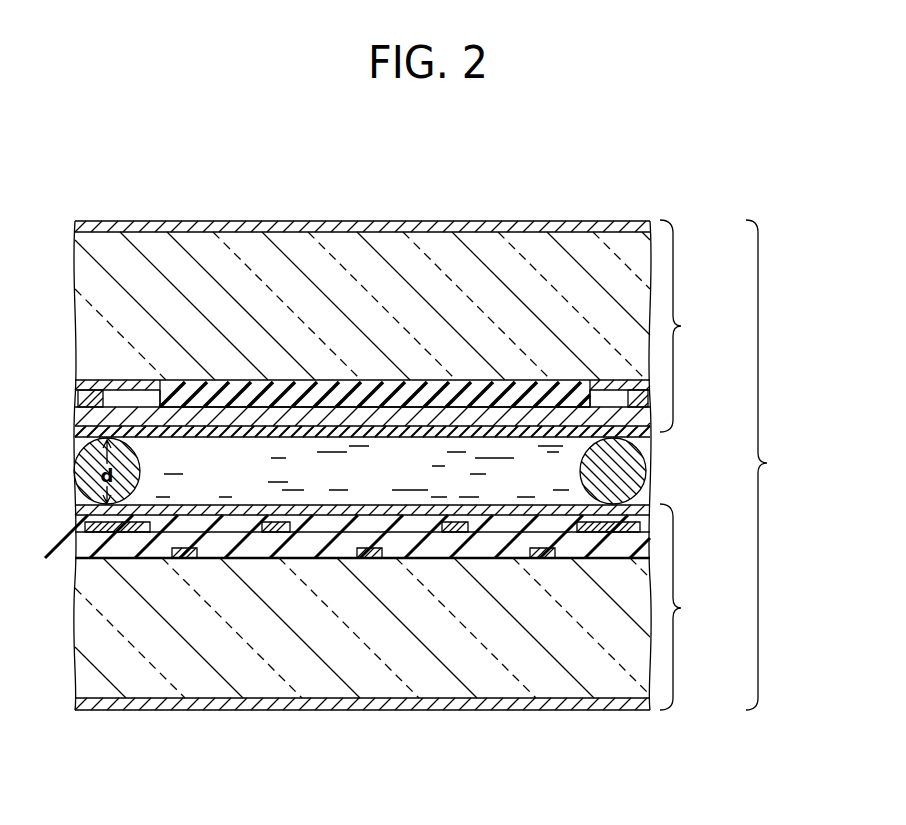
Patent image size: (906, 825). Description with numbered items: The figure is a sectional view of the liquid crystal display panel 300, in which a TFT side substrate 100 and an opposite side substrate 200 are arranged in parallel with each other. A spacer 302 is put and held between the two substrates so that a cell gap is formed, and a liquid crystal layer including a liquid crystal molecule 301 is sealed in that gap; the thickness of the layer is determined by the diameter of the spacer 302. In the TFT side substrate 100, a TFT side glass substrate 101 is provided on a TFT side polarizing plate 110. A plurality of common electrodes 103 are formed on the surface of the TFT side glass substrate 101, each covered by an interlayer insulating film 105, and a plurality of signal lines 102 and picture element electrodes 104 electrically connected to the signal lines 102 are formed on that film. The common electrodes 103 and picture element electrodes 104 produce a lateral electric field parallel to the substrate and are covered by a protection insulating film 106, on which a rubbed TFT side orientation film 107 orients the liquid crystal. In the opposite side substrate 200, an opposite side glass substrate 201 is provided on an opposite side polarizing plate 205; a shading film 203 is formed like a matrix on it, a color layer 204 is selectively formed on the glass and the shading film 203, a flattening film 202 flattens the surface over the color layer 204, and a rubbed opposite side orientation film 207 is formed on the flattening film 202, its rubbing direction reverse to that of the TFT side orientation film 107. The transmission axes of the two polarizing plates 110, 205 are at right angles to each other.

The TFT side substrate 100 is at (693, 607).
The TFT side glass substrate 101 is at (548, 670).
The signal line 102 is at (85, 527).
The common electrode 103 is at (183, 556).
The picture element electrode 104 is at (453, 533).
The interlayer insulating film 105 is at (77, 550).
The protection insulating film 106 is at (328, 526).
The TFT side orientation film 107 is at (652, 497).
The TFT side polarizing plate 110 is at (229, 712).
The opposite side substrate 200 is at (693, 326).
The opposite side glass substrate 201 is at (230, 250).
The flattening film 202 is at (428, 420).
The shading film 203 is at (92, 381).
The color layer 204 is at (340, 383).
The opposite side polarizing plate 205 is at (585, 222).
The opposite side orientation film 207 is at (76, 435).
The liquid crystal display panel 300 is at (782, 465).
The liquid crystal molecule 301 is at (460, 462).
The spacer 302 is at (652, 463).